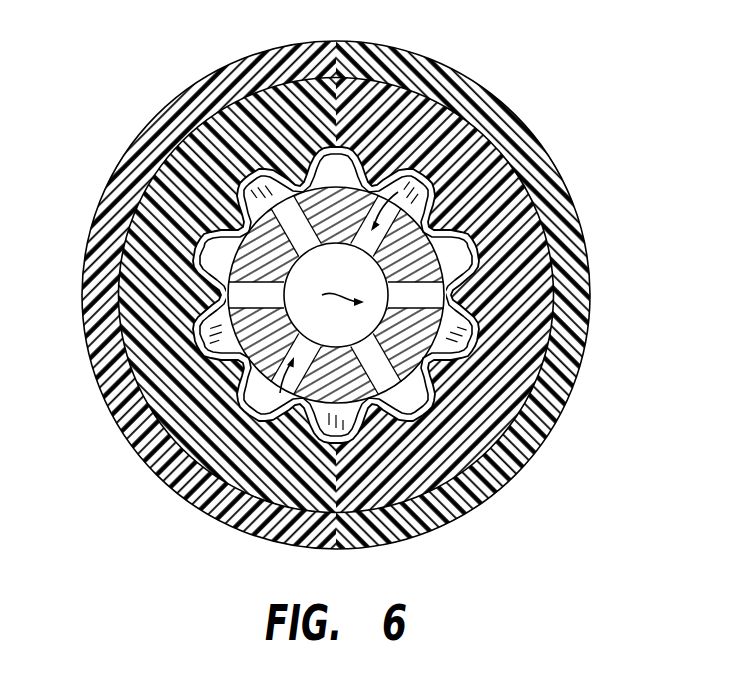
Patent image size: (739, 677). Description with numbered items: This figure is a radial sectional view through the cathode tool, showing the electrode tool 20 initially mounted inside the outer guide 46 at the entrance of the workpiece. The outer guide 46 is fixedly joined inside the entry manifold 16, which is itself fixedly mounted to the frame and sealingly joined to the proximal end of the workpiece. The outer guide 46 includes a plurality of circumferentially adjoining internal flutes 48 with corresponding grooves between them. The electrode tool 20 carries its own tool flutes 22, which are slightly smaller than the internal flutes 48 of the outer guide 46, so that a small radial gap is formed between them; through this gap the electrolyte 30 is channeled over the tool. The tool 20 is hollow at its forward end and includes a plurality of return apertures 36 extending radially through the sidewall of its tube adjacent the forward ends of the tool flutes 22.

The entry manifold 16 is at (550, 430).
The electrode tool 20 is at (432, 240).
The tool flutes 22 is at (464, 259).
The return apertures 36 is at (218, 290).
The internal flutes 48 is at (457, 293).
The outer guide 46 is at (397, 150).
The electrolyte 30 is at (312, 331).